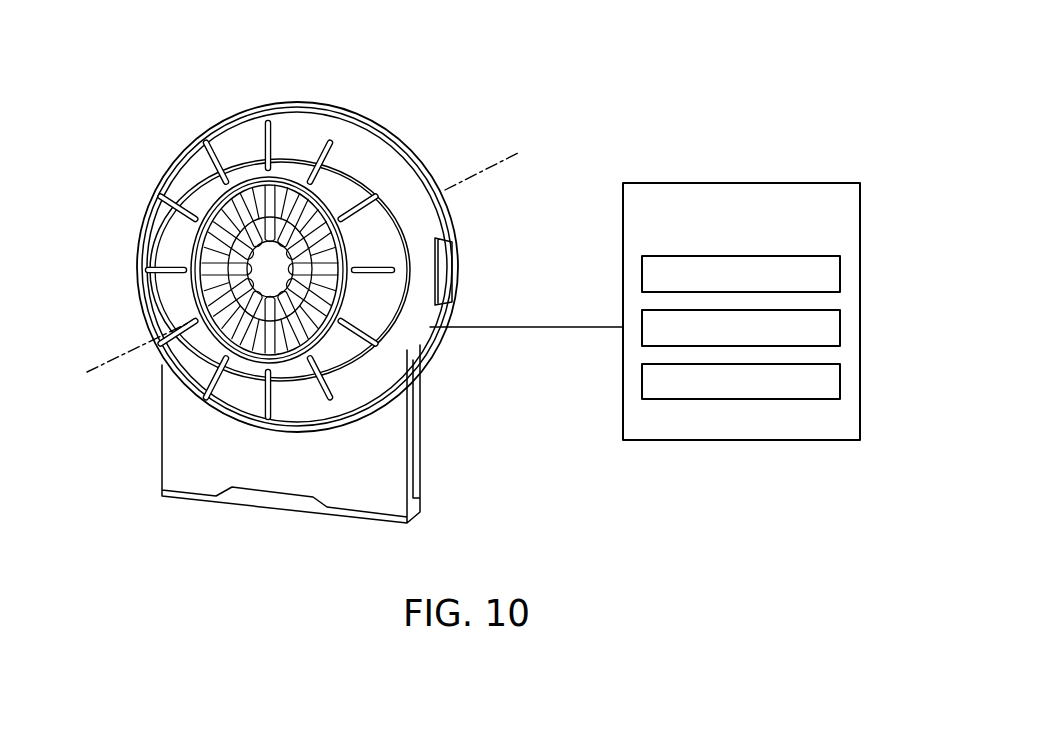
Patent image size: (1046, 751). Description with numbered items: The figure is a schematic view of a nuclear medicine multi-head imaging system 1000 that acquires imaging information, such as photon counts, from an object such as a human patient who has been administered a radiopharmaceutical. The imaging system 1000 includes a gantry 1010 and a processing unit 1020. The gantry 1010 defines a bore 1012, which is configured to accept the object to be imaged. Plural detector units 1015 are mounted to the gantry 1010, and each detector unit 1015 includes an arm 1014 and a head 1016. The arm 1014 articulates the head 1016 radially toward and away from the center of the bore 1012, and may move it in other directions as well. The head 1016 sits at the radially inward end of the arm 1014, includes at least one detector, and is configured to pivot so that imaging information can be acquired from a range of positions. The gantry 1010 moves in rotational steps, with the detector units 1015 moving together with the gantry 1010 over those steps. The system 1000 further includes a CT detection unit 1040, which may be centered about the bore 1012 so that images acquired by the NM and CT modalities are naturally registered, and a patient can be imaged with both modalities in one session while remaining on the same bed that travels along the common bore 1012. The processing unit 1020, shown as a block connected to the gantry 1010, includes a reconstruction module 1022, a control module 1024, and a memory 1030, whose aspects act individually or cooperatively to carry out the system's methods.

The multi-head imaging system 1000 is at (499, 261).
The gantry 1010 is at (248, 165).
The bore 1012 is at (278, 286).
The arm 1014 is at (344, 202).
The detector unit 1015 is at (330, 205).
The head 1016 is at (235, 280).
The processing unit 1020 is at (740, 183).
The reconstruction module 1022 is at (841, 272).
The control module 1024 is at (841, 326).
The memory 1030 is at (841, 379).
The CT detection unit 1040 is at (458, 222).